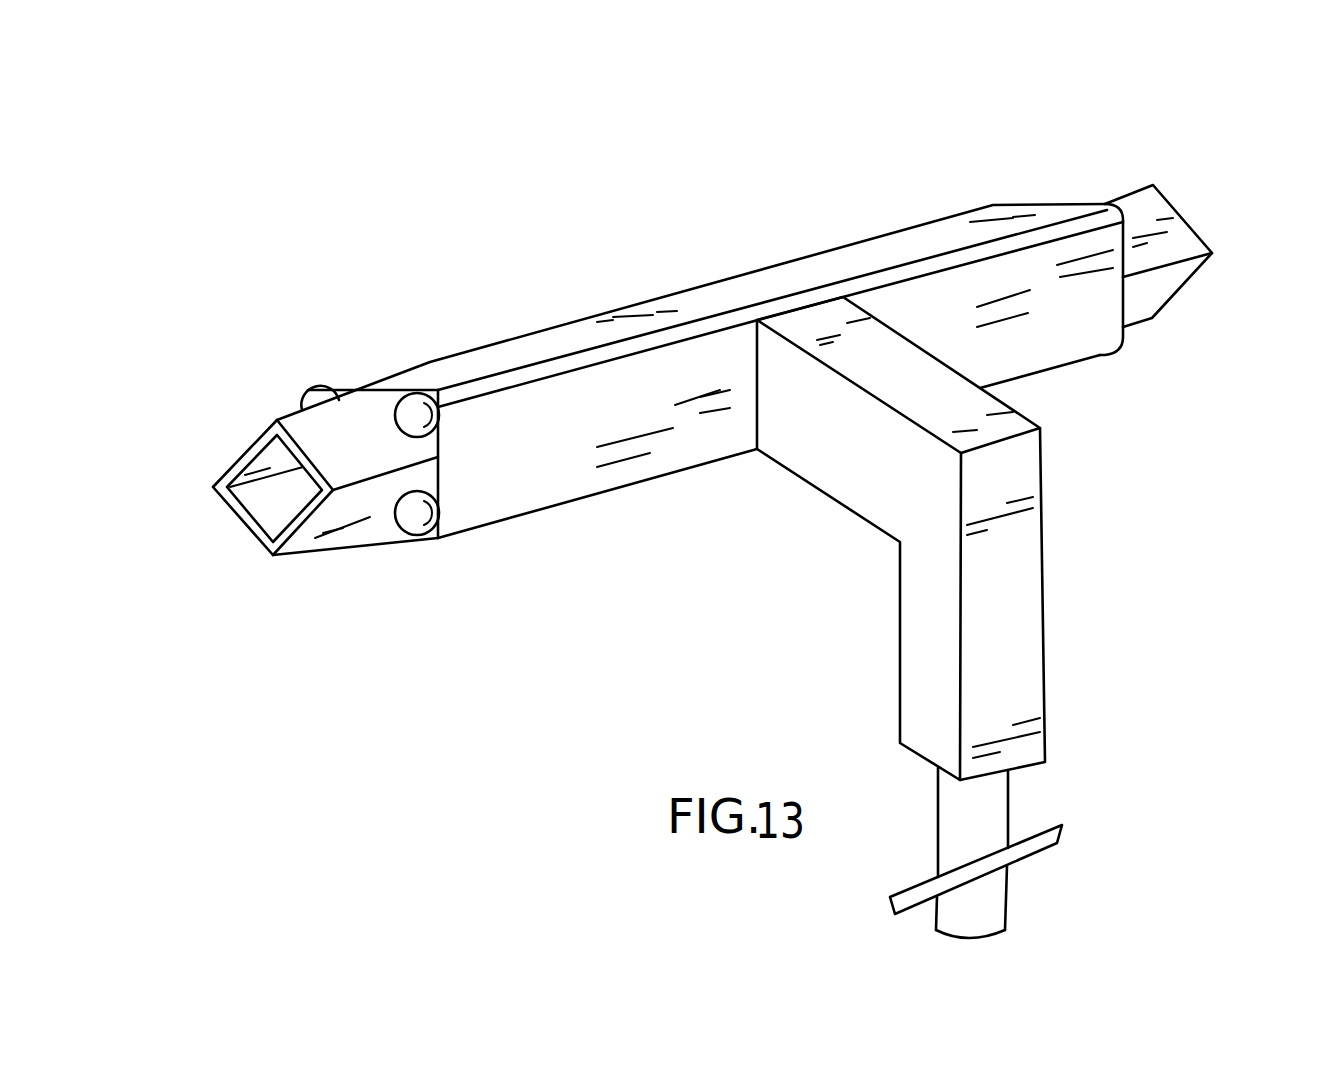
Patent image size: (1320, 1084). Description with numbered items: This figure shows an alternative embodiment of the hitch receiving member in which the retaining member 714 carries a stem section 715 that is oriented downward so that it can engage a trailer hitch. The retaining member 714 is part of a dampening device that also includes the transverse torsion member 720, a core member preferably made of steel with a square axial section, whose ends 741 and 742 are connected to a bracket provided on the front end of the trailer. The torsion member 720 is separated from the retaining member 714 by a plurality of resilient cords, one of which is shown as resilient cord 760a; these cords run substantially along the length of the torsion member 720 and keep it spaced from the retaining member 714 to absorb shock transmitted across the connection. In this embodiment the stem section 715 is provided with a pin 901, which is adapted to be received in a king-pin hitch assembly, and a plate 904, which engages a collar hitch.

The retaining member 714 is at (1073, 347).
The stem section 715 is at (1028, 662).
The torsion member 720 is at (323, 541).
The end of torsion member 741 is at (282, 416).
The end of torsion member 742 is at (1153, 185).
The resilient cord 760a is at (435, 512).
The pin 901 is at (1012, 800).
The plate 904 is at (1063, 842).